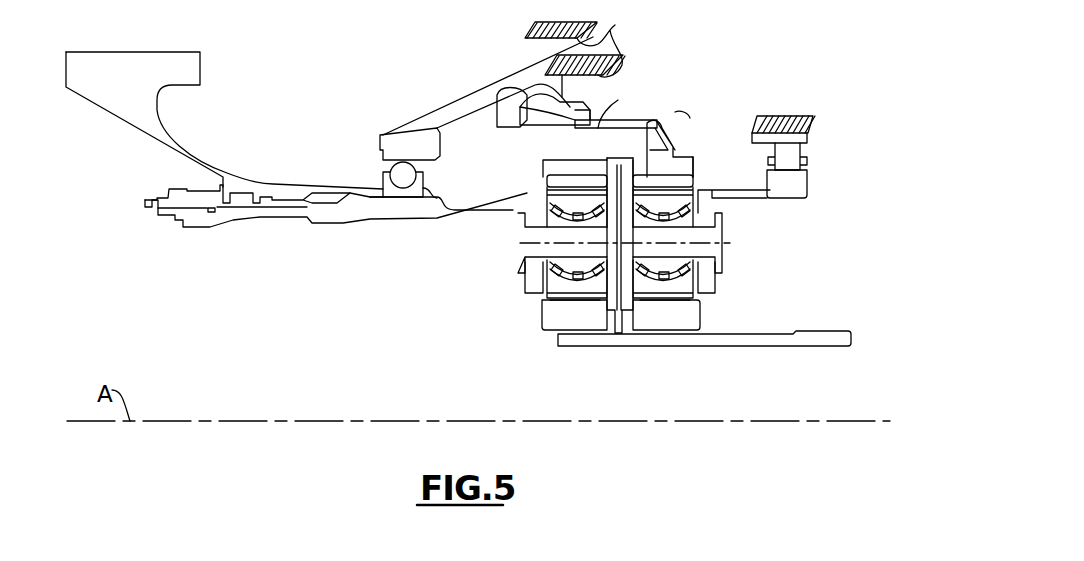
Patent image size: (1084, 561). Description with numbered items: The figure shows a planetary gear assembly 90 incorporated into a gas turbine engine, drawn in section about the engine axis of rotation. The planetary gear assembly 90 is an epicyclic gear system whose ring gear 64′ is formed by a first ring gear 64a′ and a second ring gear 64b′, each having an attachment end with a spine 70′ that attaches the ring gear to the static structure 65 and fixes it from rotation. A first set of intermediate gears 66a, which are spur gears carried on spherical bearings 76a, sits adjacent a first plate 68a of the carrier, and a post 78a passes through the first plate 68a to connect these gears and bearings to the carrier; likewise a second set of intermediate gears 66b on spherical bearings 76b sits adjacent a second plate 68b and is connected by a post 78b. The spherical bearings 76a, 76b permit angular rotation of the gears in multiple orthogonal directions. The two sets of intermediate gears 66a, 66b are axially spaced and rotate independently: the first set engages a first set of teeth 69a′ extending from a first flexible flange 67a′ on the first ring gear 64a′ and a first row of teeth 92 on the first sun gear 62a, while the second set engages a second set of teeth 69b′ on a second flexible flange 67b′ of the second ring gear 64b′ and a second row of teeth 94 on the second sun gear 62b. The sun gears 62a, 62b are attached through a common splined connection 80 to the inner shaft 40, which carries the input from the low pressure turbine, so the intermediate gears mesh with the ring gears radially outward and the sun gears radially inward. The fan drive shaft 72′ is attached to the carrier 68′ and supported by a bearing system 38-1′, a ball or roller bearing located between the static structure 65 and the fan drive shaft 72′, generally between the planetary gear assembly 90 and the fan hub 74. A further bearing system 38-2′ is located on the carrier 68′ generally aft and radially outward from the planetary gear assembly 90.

The fan hub 74 is at (200, 67).
The fan drive shaft 72′ is at (233, 221).
The bearing system 38-1′ is at (373, 166).
The bearing system 38-2′ is at (816, 161).
The first ring gear 64a′ is at (539, 161).
The second ring gear 64b′ is at (658, 120).
The ring gear 64′ is at (650, 152).
The spine 70′ is at (553, 112).
The first flexible flange 67a′ is at (565, 95).
The second flexible flange 67b′ is at (690, 112).
The static structure 65 is at (600, 30).
The first set of teeth 69a′ is at (619, 111).
The second set of teeth 69b′ is at (678, 172).
The planetary gear assembly 90 is at (724, 60).
The first set of intermediate gears 66a is at (541, 195).
The second set of intermediate gears 66b is at (698, 190).
The common splined connection 80 is at (610, 335).
The post 78a is at (518, 246).
The post 78b is at (722, 233).
The first plate 68a is at (525, 287).
The second plate 68b is at (715, 282).
The carrier 68′ is at (730, 185).
The spherical bearings 76a is at (567, 298).
The spherical bearings 76b is at (700, 278).
The first sun gear 62a is at (570, 318).
The second sun gear 62b is at (688, 318).
The first row of teeth 92 is at (557, 278).
The second row of teeth 94 is at (700, 306).
The inner shaft 40 is at (800, 348).